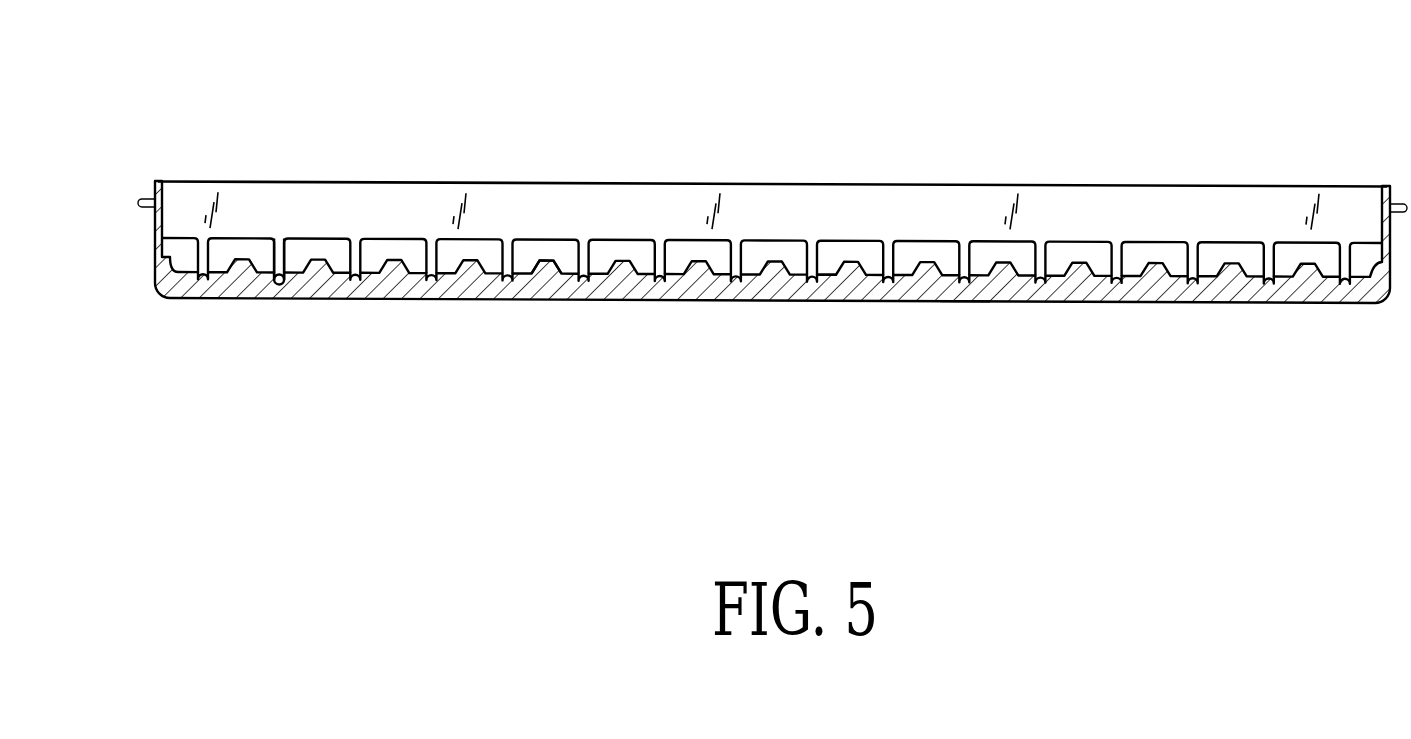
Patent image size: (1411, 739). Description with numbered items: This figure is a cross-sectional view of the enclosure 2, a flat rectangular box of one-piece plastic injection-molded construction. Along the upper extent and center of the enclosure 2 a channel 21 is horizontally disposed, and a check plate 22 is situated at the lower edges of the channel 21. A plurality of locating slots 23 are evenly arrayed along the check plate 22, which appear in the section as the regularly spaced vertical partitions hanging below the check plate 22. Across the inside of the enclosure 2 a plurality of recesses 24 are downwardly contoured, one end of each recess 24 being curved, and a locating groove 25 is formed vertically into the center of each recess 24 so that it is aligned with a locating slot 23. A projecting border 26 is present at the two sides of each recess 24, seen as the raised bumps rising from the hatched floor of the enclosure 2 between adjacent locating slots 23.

The enclosure 2 is at (623, 290).
The channel 21 is at (1077, 218).
The check plate 22 is at (397, 247).
The locating slot 23 is at (282, 233).
The recess 24 is at (830, 277).
The locating groove 25 is at (963, 290).
The projecting border 26 is at (553, 260).